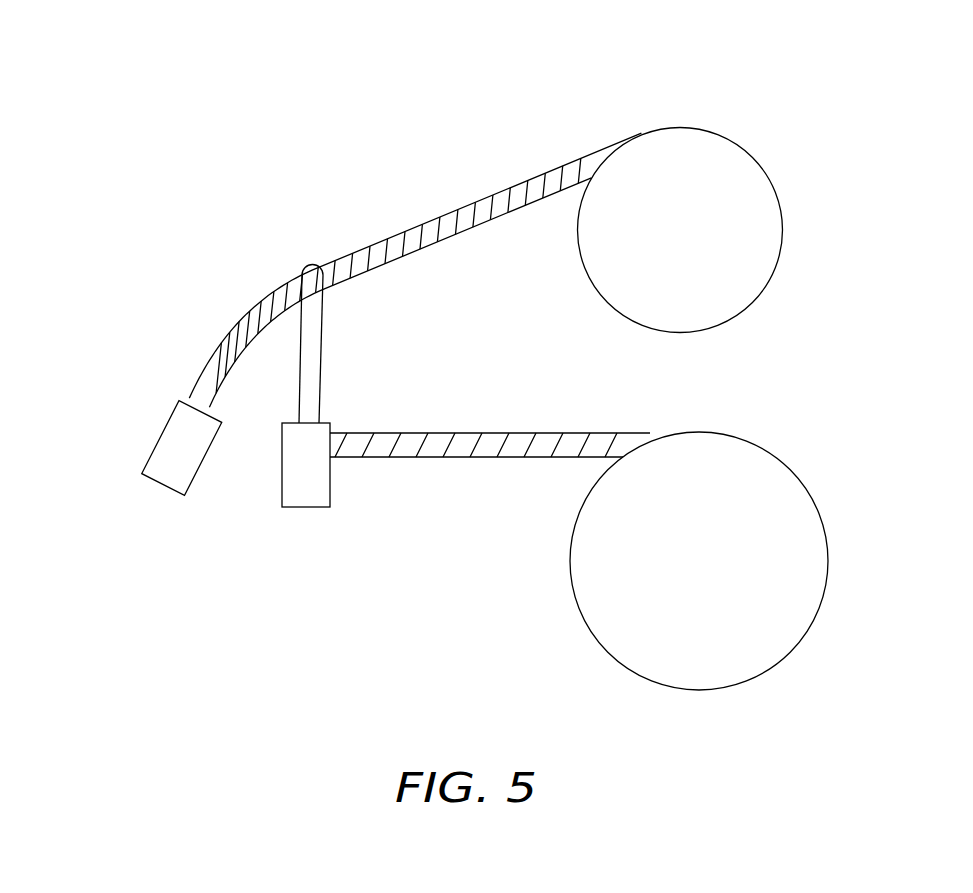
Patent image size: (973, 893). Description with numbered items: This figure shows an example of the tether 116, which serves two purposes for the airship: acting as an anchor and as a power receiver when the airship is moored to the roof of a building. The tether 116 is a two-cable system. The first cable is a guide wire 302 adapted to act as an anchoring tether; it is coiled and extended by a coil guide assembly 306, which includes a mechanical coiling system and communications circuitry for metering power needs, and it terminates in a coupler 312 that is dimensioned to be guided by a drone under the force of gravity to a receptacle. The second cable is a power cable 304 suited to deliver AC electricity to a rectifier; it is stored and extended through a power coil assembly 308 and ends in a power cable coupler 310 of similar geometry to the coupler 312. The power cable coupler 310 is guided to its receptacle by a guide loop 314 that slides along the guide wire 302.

The tether 116 is at (802, 90).
The guide wire 302 is at (497, 192).
The power cable 304 is at (550, 433).
The coil guide assembly 306 is at (680, 230).
The power coil assembly 308 is at (699, 561).
The power cable coupler 310 is at (300, 507).
The coupler 312 is at (157, 442).
The guide loop 314 is at (303, 266).